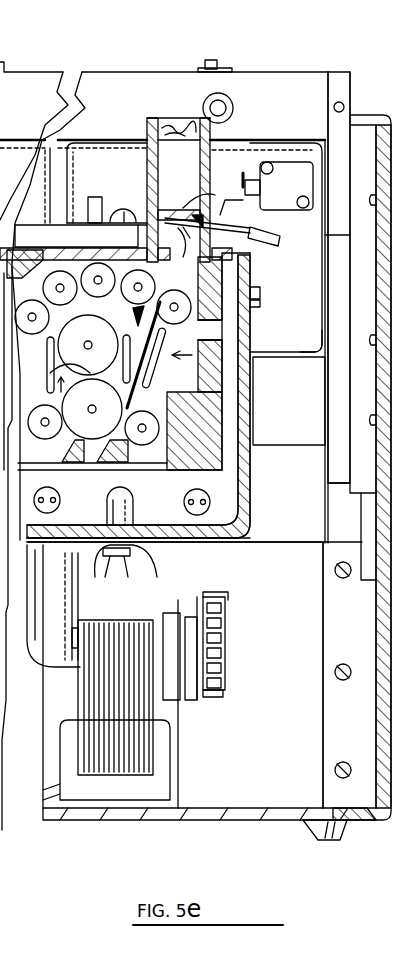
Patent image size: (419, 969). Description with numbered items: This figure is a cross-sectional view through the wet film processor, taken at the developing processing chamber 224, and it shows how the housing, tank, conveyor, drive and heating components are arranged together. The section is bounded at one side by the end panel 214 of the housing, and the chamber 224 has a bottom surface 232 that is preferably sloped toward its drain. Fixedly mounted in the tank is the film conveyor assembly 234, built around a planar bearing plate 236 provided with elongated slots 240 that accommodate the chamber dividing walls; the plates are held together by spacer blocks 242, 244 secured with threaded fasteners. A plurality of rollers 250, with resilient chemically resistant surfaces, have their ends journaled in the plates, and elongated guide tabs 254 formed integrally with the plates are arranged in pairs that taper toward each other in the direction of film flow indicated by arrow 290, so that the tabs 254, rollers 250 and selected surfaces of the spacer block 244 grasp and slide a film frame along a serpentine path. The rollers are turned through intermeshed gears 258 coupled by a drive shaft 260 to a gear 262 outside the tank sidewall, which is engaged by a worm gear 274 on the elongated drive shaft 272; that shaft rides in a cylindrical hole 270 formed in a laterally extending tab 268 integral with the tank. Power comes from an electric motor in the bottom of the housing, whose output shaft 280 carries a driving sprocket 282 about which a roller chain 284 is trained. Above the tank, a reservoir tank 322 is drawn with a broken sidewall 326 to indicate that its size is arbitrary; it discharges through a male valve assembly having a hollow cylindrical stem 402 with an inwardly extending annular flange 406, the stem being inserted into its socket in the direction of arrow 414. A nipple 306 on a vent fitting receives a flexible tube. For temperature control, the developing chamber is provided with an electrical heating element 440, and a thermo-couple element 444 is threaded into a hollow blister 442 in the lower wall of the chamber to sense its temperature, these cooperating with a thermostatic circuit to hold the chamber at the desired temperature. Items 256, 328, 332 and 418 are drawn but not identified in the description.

The end panel 214 is at (382, 710).
The processing chamber 224 is at (157, 490).
The bottom surface 232 is at (197, 525).
The film conveyor assembly 234 is at (215, 355).
The bearing plate 236 is at (220, 384).
The elongated slot 240 is at (18, 482).
The spacer block 242 is at (213, 472).
The spacer block 244 is at (133, 508).
The roller 250 is at (118, 413).
The elongated tab 254 is at (207, 137).
The hatched column 256 is at (165, 120).
The intermeshed gear 258 is at (252, 300).
The drive shaft 260 is at (176, 212).
The gear 262 is at (185, 208).
The laterally extending tab 268 is at (137, 235).
The cylindrical hole 270 is at (232, 255).
The drive shaft 272 is at (237, 221).
The worm gear 274 is at (282, 240).
The output shaft 280 is at (295, 200).
The driving sprocket 282 is at (220, 698).
The roller chain 284 is at (225, 644).
The arrow 290 is at (137, 317).
The nipple 306 is at (112, 203).
The reservoir tank 322 is at (115, 173).
The broken sidewall 326 is at (318, 333).
The lower compartment 328 is at (175, 567).
The bracket 332 is at (367, 582).
The stem 402 is at (333, 130).
The annular flange 406 is at (340, 102).
The arrow 414 is at (232, 67).
The cover 418 is at (0, 124).
The electrical heating element 440 is at (80, 496).
The hollow blister 442 is at (110, 565).
The thermo-couple element 444 is at (150, 575).